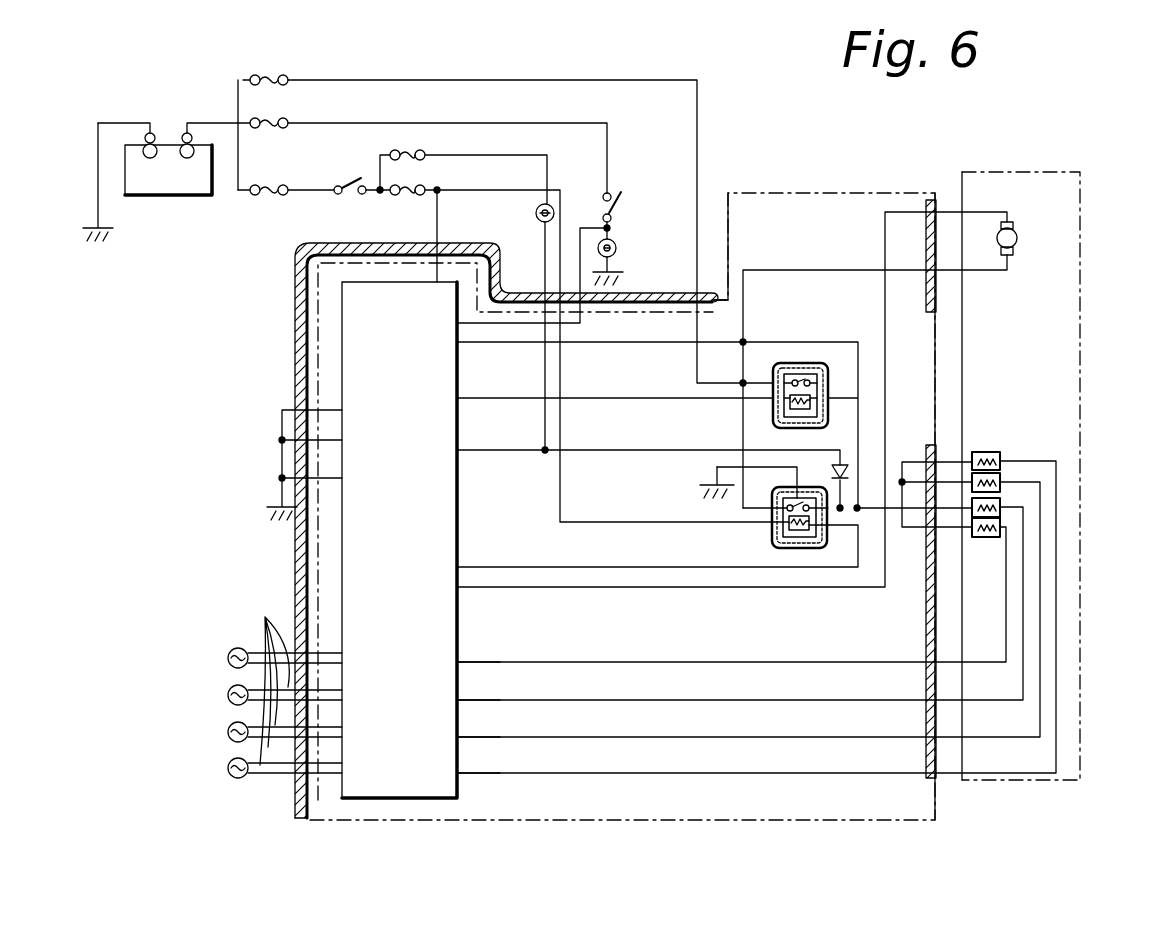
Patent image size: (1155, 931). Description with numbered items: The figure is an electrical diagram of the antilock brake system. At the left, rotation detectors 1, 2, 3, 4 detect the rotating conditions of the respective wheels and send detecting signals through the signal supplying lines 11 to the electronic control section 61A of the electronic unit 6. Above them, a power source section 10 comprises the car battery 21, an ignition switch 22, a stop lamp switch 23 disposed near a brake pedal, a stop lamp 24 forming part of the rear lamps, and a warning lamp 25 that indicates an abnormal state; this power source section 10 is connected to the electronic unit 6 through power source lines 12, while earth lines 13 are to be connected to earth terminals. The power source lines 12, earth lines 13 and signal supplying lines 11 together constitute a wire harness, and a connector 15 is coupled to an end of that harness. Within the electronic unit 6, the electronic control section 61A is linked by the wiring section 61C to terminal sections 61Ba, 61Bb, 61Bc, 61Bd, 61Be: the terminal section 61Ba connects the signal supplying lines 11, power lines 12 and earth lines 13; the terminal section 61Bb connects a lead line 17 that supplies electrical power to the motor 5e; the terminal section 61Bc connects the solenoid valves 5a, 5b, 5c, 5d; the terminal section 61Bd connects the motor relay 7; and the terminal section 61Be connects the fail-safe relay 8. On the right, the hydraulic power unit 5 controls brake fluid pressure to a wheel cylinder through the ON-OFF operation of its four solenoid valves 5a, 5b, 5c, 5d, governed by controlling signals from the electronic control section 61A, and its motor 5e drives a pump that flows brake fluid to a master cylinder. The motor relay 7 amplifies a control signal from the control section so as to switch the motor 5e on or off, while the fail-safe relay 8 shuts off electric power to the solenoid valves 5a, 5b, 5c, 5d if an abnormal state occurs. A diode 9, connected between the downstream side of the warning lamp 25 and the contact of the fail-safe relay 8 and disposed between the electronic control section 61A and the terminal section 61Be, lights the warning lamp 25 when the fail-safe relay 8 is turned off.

The rotation detector 1 is at (228, 654).
The rotation detector 2 is at (228, 694).
The rotation detector 3 is at (228, 732).
The rotation detector 4 is at (228, 772).
The hydraulic power unit 5 is at (1082, 628).
The solenoid valve 5a is at (1000, 452).
The solenoid valve 5b is at (1000, 477).
The solenoid valve 5c is at (1000, 500).
The solenoid valve 5d is at (1000, 523).
The motor 5e is at (1017, 235).
The electronic unit 6 is at (856, 822).
The motor relay 7 is at (812, 363).
The fail-safe relay 8 is at (802, 549).
The diode 9 is at (848, 466).
The power source section 10 is at (606, 80).
The signal supplying lines 11 is at (274, 677).
The power source lines 12 is at (698, 141).
The earth lines 13 is at (98, 172).
The connector 15 is at (295, 328).
The motor wiring 17 is at (977, 206).
The car battery 21 is at (168, 196).
The ignition switch 22 is at (347, 184).
The stop lamp switch 23 is at (615, 204).
The stop lamp 24 is at (617, 244).
The warning lamp 25 is at (536, 212).
The electronic control section 61A is at (445, 798).
The terminal section 61Ba is at (317, 800).
The terminal section 61Bb is at (928, 285).
The terminal section 61Bc is at (922, 600).
The terminal section 61Bd is at (807, 356).
The terminal section 61Be is at (752, 547).
The wiring section 61C is at (720, 775).